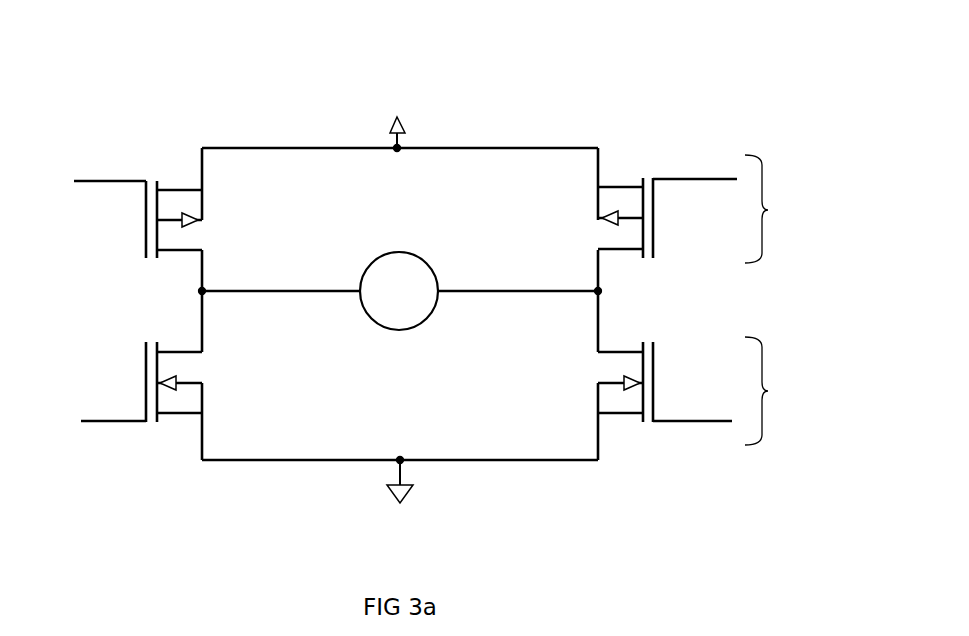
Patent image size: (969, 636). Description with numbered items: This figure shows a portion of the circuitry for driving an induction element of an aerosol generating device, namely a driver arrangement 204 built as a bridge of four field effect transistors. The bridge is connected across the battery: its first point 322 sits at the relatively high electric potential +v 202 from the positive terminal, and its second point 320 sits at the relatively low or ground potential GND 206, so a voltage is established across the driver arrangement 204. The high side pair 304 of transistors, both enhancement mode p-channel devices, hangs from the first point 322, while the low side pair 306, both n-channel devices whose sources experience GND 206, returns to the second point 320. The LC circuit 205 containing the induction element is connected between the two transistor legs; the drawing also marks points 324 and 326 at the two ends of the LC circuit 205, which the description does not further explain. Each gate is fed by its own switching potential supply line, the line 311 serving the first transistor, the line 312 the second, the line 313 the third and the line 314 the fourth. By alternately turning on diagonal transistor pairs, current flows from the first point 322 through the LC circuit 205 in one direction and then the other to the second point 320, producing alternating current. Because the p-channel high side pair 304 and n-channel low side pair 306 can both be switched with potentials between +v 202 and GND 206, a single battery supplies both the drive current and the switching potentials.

The driver arrangement 204 is at (613, 99).
The high electric potential +v 202 is at (358, 129).
The LC circuit 205 is at (379, 303).
The ground potential GND 206 is at (384, 501).
The high side pair of transistors 304 is at (769, 210).
The low side pair of transistors 306 is at (769, 391).
The switching potential supply line 311 is at (97, 181).
The switching potential supply line 312 is at (698, 178).
The switching potential supply line 313 is at (115, 421).
The switching potential supply line 314 is at (692, 422).
The second point of the driver arrangement 320 is at (400, 460).
The first point of the driver arrangement 322 is at (397, 148).
The right load output node 324 is at (598, 291).
The left load output node 326 is at (202, 291).